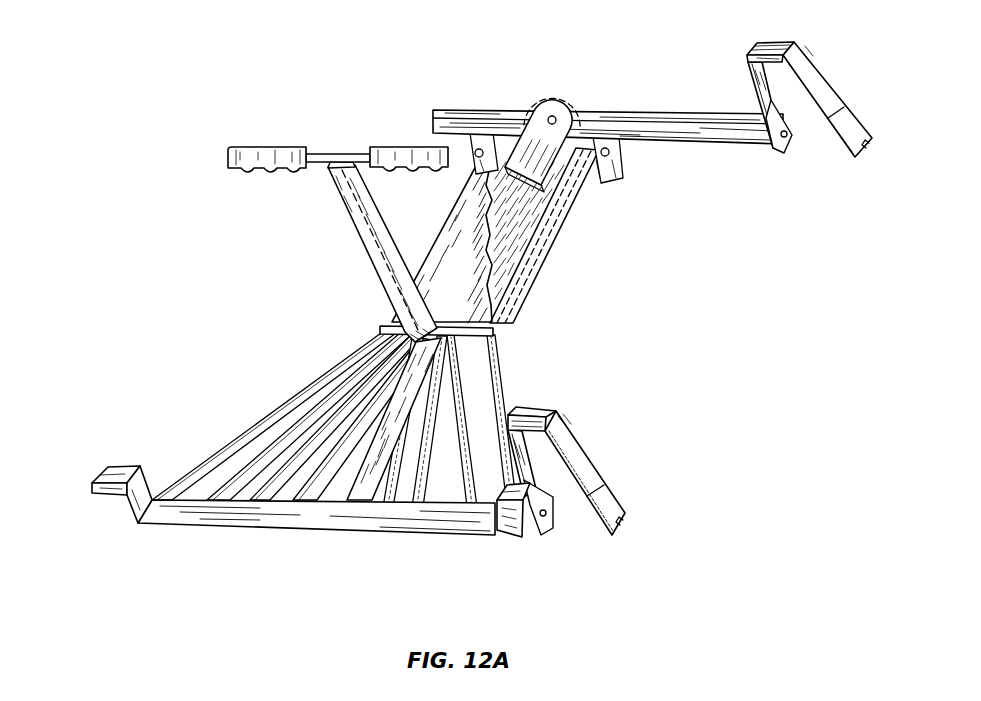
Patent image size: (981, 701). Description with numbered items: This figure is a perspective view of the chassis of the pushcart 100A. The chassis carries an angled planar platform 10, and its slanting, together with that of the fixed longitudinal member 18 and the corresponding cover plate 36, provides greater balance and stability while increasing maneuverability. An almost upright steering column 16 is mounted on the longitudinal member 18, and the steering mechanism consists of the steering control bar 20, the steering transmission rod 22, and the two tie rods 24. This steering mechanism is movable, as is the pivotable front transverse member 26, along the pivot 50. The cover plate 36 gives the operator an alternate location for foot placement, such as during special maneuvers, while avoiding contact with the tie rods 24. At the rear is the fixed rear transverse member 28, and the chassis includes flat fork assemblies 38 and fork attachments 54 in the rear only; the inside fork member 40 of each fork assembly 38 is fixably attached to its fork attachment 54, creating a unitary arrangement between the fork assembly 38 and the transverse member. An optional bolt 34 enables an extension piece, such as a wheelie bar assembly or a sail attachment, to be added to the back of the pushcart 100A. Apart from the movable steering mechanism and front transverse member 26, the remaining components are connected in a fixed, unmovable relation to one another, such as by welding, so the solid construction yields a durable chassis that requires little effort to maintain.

The pushcart 100A is at (178, 70).
The platform 10 is at (323, 473).
The steering column 16 is at (359, 252).
The longitudinal member 18 is at (394, 455).
The steering control bar 20 is at (247, 148).
The steering transmission rod 22 is at (345, 212).
The tie rods 24 is at (462, 190).
The front transverse member 26 is at (648, 117).
The rear transverse member 28 is at (302, 510).
The bolt 34 is at (125, 458).
The cover plate 36 is at (484, 310).
The fork assembly 38 is at (778, 38).
The inside fork member 40 is at (777, 143).
The pivot 50 is at (552, 113).
The fork attachment 54 is at (501, 539).